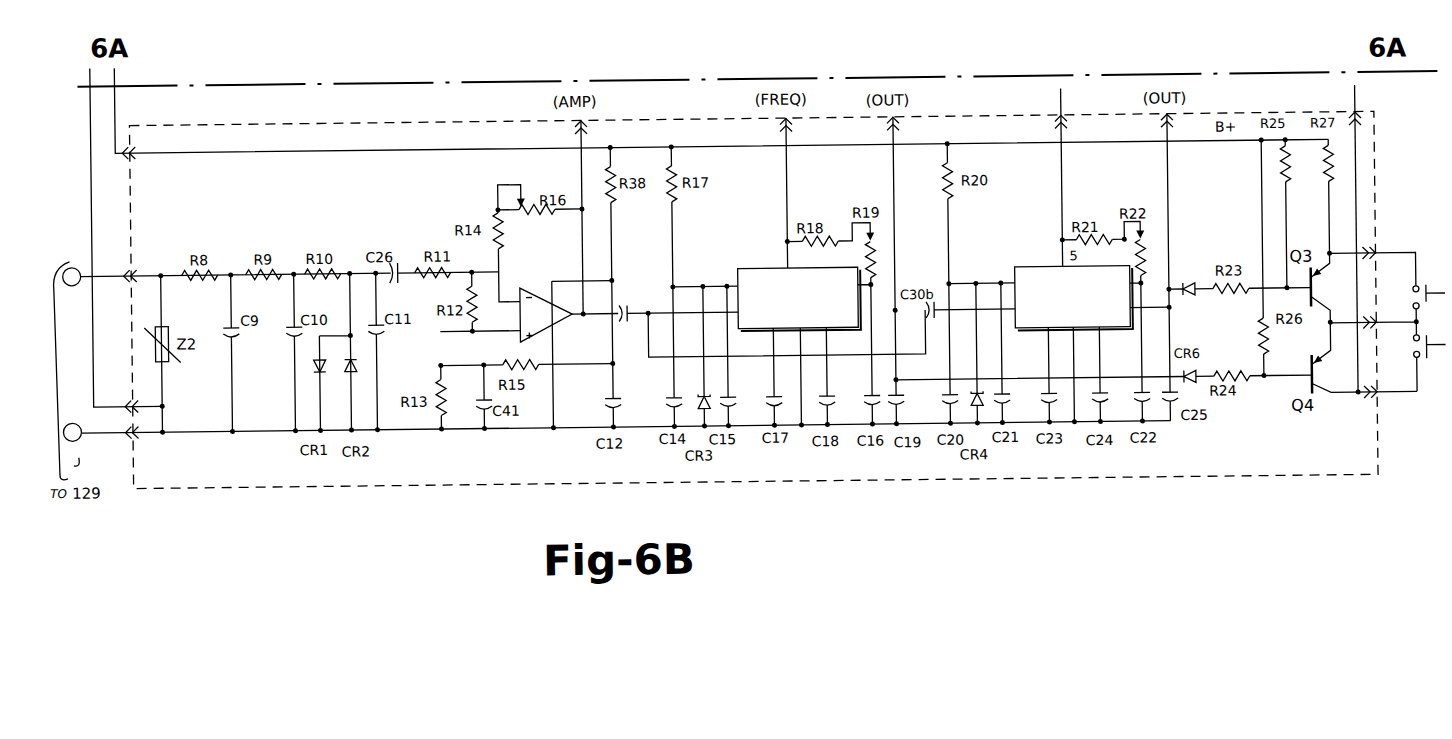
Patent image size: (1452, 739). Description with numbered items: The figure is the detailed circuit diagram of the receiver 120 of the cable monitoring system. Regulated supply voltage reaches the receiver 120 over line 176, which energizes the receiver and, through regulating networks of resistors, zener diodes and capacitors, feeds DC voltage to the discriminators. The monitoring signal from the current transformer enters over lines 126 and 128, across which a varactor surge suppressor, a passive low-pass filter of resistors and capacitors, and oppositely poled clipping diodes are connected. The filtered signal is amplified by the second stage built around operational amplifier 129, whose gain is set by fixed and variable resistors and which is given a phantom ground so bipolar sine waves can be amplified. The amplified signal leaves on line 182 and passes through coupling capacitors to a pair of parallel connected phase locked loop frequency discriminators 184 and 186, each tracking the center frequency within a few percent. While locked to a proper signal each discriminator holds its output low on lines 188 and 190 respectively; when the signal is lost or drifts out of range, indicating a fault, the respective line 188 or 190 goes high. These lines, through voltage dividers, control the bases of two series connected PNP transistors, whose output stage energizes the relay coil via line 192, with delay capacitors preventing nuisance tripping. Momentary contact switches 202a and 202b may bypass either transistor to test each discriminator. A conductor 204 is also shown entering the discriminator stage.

The receiver 120 is at (335, 117).
The line 176 is at (117, 68).
The line 126 is at (112, 269).
The line 128 is at (112, 426).
The operational amplifier 129 is at (537, 285).
The line 182 is at (623, 303).
The phase locked loop frequency discriminator 184 is at (740, 270).
The phase locked loop frequency discriminator 186 is at (1017, 272).
The line 188 is at (937, 382).
The line 190 is at (1178, 290).
The line 192 is at (1357, 98).
The momentary contact switch 202a is at (1431, 288).
The momentary contact switch 202b is at (1432, 368).
The conductor 204 is at (1063, 134).